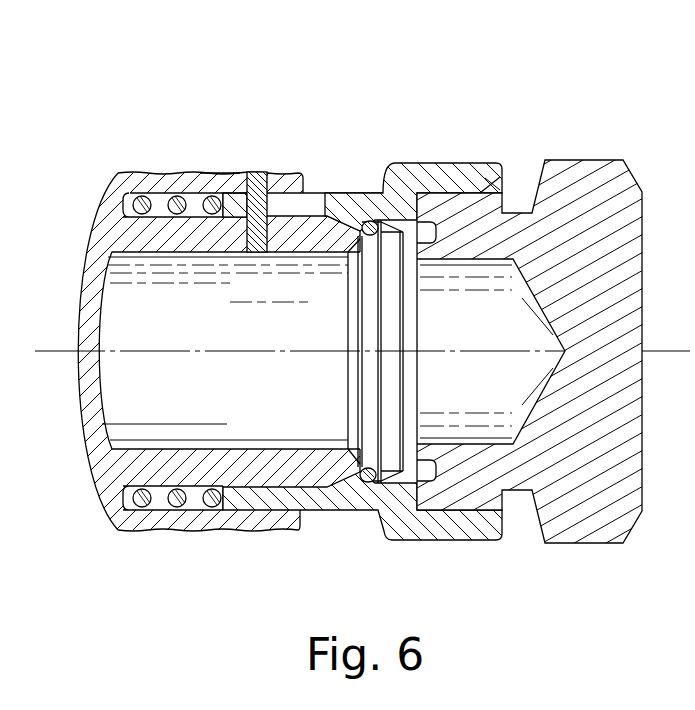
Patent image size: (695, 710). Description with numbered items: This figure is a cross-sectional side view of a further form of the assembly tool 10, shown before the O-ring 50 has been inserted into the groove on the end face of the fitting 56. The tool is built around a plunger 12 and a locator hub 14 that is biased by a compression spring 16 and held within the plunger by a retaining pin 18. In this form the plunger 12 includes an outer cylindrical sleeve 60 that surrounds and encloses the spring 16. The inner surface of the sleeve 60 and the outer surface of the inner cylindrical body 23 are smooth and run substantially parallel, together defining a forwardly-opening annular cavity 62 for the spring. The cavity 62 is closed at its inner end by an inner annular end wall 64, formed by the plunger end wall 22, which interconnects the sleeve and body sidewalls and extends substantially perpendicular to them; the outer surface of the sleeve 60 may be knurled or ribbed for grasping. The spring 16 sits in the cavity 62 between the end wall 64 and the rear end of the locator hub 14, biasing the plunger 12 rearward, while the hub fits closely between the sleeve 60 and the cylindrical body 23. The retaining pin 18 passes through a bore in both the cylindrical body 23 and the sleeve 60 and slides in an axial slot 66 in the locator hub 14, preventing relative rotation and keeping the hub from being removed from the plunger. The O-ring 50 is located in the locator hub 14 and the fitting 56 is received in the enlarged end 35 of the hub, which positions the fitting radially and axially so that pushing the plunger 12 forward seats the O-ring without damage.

The assembly tool 10 is at (402, 68).
The plunger 12 is at (98, 483).
The locator hub 14 is at (342, 510).
The compression spring 16 is at (176, 214).
The retaining pin 18 is at (257, 172).
The plunger end wall 22 is at (92, 262).
The cylindrical body 23 is at (196, 245).
The enlarged end 35 is at (445, 163).
The O-ring 50 is at (370, 235).
The fitting 56 is at (593, 162).
The outer cylindrical sleeve 60 is at (233, 174).
The annular cavity 62 is at (195, 200).
The inner annular end wall 64 is at (157, 193).
The axial slot 66 is at (315, 205).